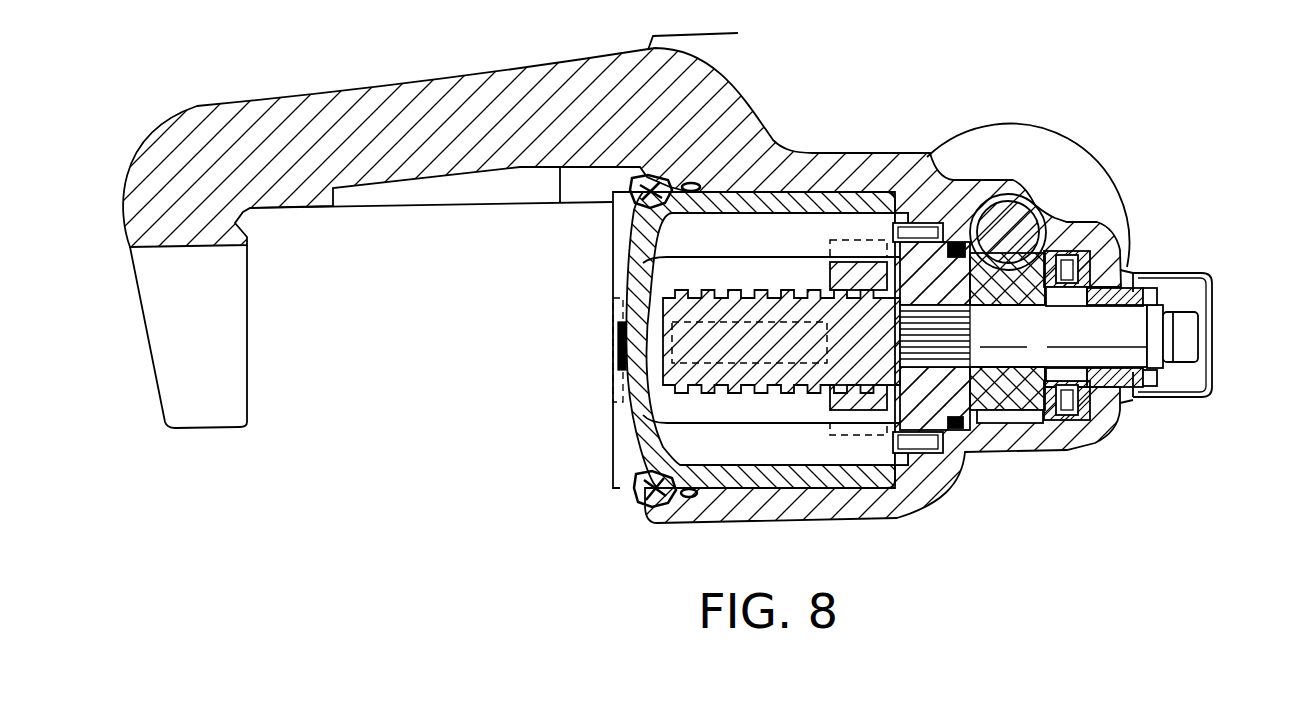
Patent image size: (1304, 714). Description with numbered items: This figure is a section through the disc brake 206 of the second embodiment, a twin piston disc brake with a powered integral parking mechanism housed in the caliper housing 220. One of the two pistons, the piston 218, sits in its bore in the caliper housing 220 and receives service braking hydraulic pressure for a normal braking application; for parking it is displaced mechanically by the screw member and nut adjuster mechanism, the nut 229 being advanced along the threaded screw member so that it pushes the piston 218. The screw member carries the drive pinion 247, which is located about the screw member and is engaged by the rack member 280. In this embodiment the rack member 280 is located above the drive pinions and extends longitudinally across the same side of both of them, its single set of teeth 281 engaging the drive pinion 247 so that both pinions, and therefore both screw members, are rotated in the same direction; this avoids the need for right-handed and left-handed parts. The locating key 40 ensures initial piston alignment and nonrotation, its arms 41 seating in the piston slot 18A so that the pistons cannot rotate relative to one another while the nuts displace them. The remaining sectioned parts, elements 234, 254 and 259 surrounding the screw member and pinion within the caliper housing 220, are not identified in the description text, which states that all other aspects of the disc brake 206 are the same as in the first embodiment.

The disc brake 206 is at (402, 86).
The piston 218 is at (725, 480).
The piston slot 18A is at (614, 377).
The locating key 40 is at (612, 308).
The arms 41 is at (613, 343).
The nut 229 is at (840, 383).
The hub 234 is at (940, 430).
The drive pinion 247 is at (1027, 400).
The caliper housing 220 is at (1050, 258).
The seal 259 is at (1095, 286).
The end cap 254 is at (1200, 272).
The rack member 280 is at (1017, 212).
The teeth 281 is at (1064, 221).